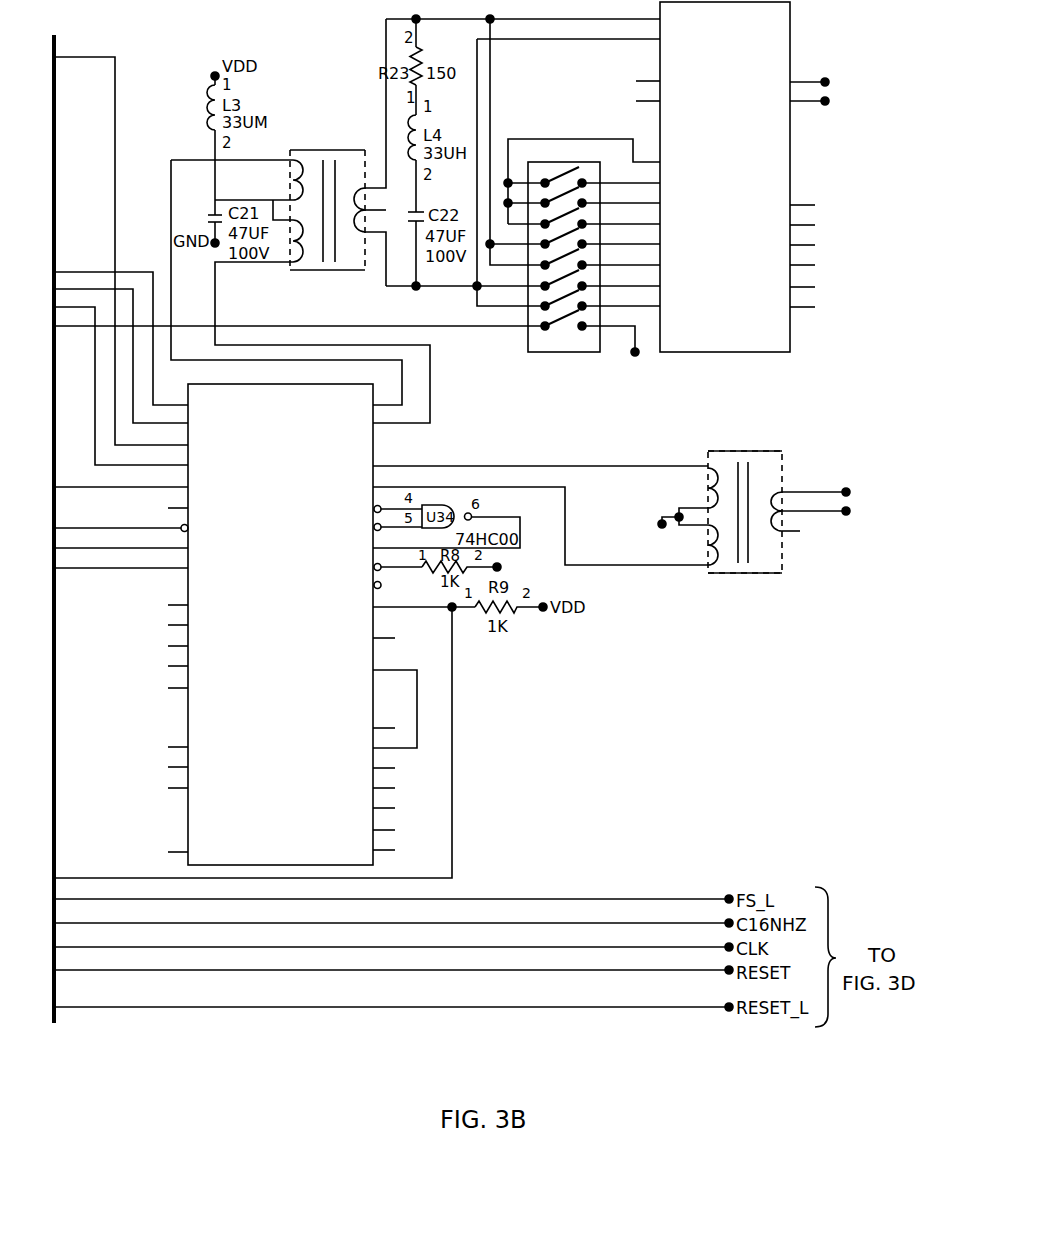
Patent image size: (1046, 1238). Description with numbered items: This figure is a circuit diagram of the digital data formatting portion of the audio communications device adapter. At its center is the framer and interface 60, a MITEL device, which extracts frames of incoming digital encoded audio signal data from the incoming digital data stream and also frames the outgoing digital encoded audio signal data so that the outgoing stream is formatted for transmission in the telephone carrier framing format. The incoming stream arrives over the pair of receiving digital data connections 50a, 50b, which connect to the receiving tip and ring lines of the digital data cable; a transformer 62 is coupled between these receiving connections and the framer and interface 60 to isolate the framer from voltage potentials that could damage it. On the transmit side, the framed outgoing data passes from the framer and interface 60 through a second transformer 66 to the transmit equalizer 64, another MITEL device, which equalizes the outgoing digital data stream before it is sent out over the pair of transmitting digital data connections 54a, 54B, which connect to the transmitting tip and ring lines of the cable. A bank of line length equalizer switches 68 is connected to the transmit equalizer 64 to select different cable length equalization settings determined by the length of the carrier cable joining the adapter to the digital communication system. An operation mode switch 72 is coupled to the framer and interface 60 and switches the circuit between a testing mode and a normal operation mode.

The receiving digital data connection 50a is at (846, 490).
The receiving digital data connection 50b is at (846, 513).
The transmitting digital data connection 54a is at (825, 80).
The transmitting digital data connection 54B is at (825, 103).
The T1 framer and interface 60 is at (203, 812).
The transformer 62 is at (760, 573).
The T1 transmit equalizer 64 is at (740, 352).
The transformer 66 is at (348, 271).
The T1 line length equalizer switch 68 is at (558, 180).
The operation mode switch 72 is at (530, 320).